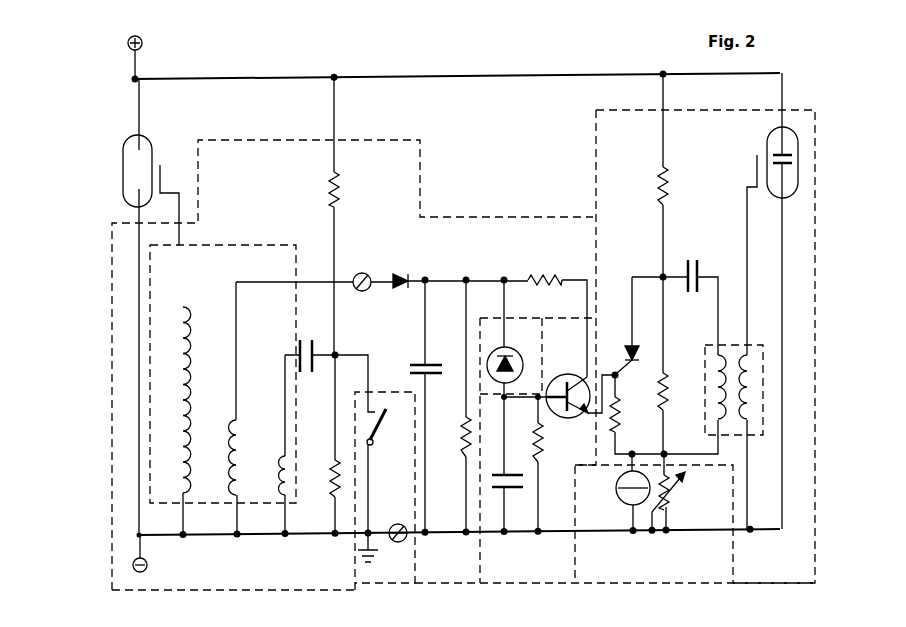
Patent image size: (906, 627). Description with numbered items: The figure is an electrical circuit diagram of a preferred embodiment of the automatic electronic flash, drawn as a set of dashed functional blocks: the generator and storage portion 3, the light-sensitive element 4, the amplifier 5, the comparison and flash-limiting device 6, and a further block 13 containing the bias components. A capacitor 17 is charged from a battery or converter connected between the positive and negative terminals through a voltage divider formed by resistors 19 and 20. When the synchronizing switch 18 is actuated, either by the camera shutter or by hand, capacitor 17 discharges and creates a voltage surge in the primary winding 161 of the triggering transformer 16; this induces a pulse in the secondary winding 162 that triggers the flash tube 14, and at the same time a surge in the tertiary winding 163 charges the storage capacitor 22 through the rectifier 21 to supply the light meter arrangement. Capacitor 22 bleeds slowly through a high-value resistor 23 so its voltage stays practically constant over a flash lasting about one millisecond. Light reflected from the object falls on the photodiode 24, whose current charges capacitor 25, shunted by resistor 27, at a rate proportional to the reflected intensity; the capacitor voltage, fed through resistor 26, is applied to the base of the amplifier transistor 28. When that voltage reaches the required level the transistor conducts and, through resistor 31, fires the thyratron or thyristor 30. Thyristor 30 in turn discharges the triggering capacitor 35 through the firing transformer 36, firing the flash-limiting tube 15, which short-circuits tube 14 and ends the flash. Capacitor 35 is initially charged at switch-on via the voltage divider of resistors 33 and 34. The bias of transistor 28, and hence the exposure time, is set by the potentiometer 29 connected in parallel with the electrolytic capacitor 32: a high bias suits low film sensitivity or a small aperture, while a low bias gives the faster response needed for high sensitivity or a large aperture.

The generator and storage portion 3 is at (263, 575).
The light-sensitive element 4 is at (525, 315).
The amplifier 5 is at (523, 568).
The comparison and flash-limiting device 6 is at (768, 566).
The indicator block 13 is at (660, 566).
The flash tube 14 is at (150, 138).
The flash-limiting tube 15 is at (767, 153).
The triggering transformer 16 is at (252, 278).
The capacitor 17 is at (317, 336).
The synchronizing switch 18 is at (374, 432).
The resistor 19 is at (334, 207).
The resistor 20 is at (332, 493).
The rectifier 21 is at (406, 276).
The storage capacitor 22 is at (410, 373).
The resistor 23 is at (463, 452).
The photodiode 24 is at (528, 348).
The capacitor 25 is at (504, 490).
The resistor 26 is at (553, 258).
The resistor 27 is at (532, 459).
The amplifier transistor 28 is at (554, 380).
The potentiometer 29 is at (680, 497).
The thyratron or thyristor 30 is at (626, 355).
The resistor 31 is at (610, 432).
The electrolytic capacitor 32 is at (617, 491).
The resistor 33 is at (668, 407).
The resistor 34 is at (657, 201).
The triggering capacitor 35 is at (700, 250).
The firing transformer 36 is at (756, 410).
The primary winding 161 is at (278, 458).
The secondary winding 162 is at (192, 369).
The tertiary winding 163 is at (191, 439).